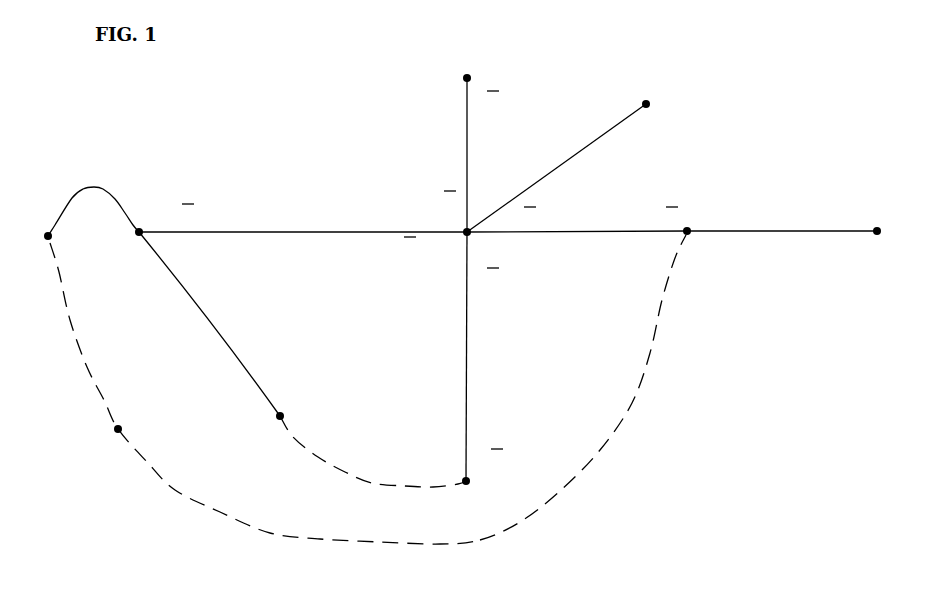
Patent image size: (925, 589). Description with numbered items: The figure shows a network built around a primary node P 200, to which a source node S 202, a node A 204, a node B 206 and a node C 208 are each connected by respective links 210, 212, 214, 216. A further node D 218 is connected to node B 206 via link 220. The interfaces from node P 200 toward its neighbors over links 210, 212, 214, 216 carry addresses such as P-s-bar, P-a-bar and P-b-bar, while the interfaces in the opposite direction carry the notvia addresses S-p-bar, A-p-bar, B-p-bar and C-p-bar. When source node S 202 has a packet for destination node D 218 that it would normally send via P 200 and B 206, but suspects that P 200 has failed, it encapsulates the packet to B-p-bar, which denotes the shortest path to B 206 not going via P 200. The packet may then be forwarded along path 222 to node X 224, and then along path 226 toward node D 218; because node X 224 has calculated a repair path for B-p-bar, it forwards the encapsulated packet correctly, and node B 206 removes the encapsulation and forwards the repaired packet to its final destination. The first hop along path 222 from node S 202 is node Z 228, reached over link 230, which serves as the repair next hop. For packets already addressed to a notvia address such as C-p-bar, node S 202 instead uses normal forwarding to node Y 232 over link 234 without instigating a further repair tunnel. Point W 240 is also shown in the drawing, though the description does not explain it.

The primary node P 200 is at (457, 244).
The source node S 202 is at (130, 234).
The node A 204 is at (470, 78).
The node B 206 is at (699, 232).
The node C 208 is at (464, 494).
The link 210 is at (275, 227).
The link 212 is at (455, 136).
The link 214 is at (582, 228).
The link 216 is at (472, 357).
The node D 218 is at (881, 241).
The link 220 is at (778, 228).
The path 222 is at (71, 370).
The node X 224 is at (125, 432).
The path 226 is at (617, 432).
The node Z 228 is at (33, 246).
The link 230 is at (75, 188).
The node Y 232 is at (290, 419).
The link 234 is at (235, 337).
The point W 240 is at (575, 158).